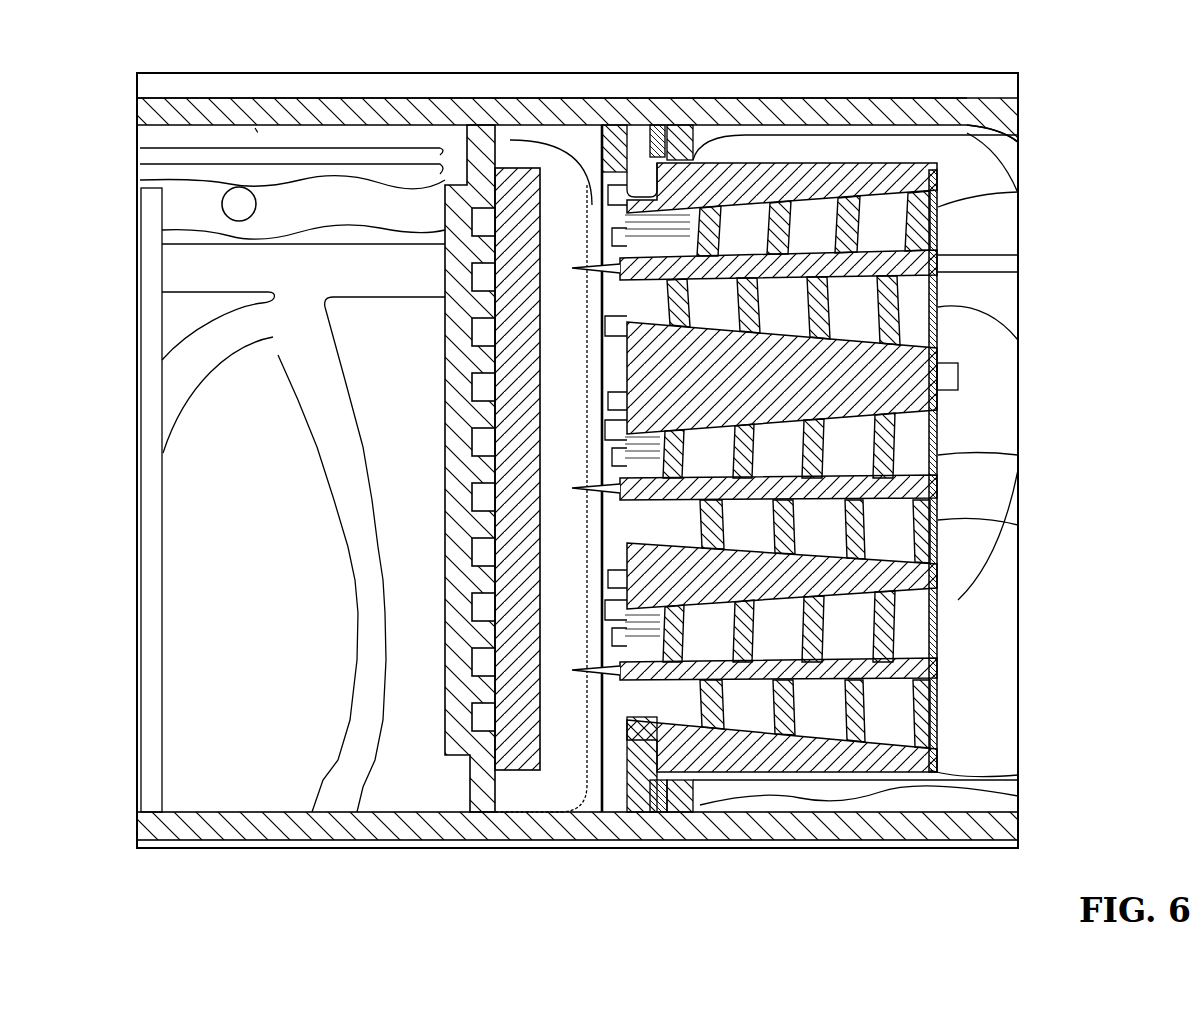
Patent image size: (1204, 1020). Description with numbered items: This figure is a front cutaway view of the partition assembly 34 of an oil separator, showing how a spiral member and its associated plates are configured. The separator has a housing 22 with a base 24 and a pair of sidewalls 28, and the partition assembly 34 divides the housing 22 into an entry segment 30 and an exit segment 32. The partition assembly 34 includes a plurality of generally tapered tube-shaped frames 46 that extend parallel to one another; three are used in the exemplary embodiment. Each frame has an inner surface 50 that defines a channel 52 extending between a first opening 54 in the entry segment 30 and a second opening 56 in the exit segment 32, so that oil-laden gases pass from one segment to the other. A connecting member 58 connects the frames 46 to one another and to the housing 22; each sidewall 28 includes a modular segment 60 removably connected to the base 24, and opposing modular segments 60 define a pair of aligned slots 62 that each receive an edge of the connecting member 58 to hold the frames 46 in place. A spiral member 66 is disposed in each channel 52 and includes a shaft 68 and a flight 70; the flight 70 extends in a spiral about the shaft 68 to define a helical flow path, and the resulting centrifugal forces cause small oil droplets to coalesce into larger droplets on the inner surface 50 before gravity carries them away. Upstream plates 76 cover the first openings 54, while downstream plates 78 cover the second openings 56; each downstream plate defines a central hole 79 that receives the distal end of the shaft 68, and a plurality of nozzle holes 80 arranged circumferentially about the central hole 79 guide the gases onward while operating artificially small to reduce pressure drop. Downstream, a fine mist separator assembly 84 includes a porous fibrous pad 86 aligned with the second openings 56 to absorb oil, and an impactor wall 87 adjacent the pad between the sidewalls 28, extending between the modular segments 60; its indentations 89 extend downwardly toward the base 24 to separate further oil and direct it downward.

The housing 22 is at (670, 850).
The base 24 is at (255, 790).
The sidewalls 28 is at (487, 96).
The entry segment 30 is at (968, 102).
The exit segment 32 is at (258, 125).
The partition assembly 34 is at (616, 92).
The frames 46 is at (845, 170).
The inner surface 50 is at (745, 213).
The channel 52 is at (882, 190).
The first opening 54 is at (942, 196).
The second opening 56 is at (622, 197).
The connecting member 58 is at (612, 150).
The modular segment 60 is at (730, 105).
The slots 62 is at (658, 130).
The spiral members 66 is at (852, 288).
The shaft 68 is at (737, 266).
The flight 70 is at (690, 246).
The upstream plates 76 is at (942, 237).
The downstream plates 78 is at (612, 330).
The central hole 79 is at (578, 271).
The nozzle holes 80 is at (615, 238).
The fine mist separator assembly 84 is at (435, 207).
The fibrous pad 86 is at (492, 580).
The impactor wall 87 is at (450, 436).
The indentations 89 is at (478, 278).